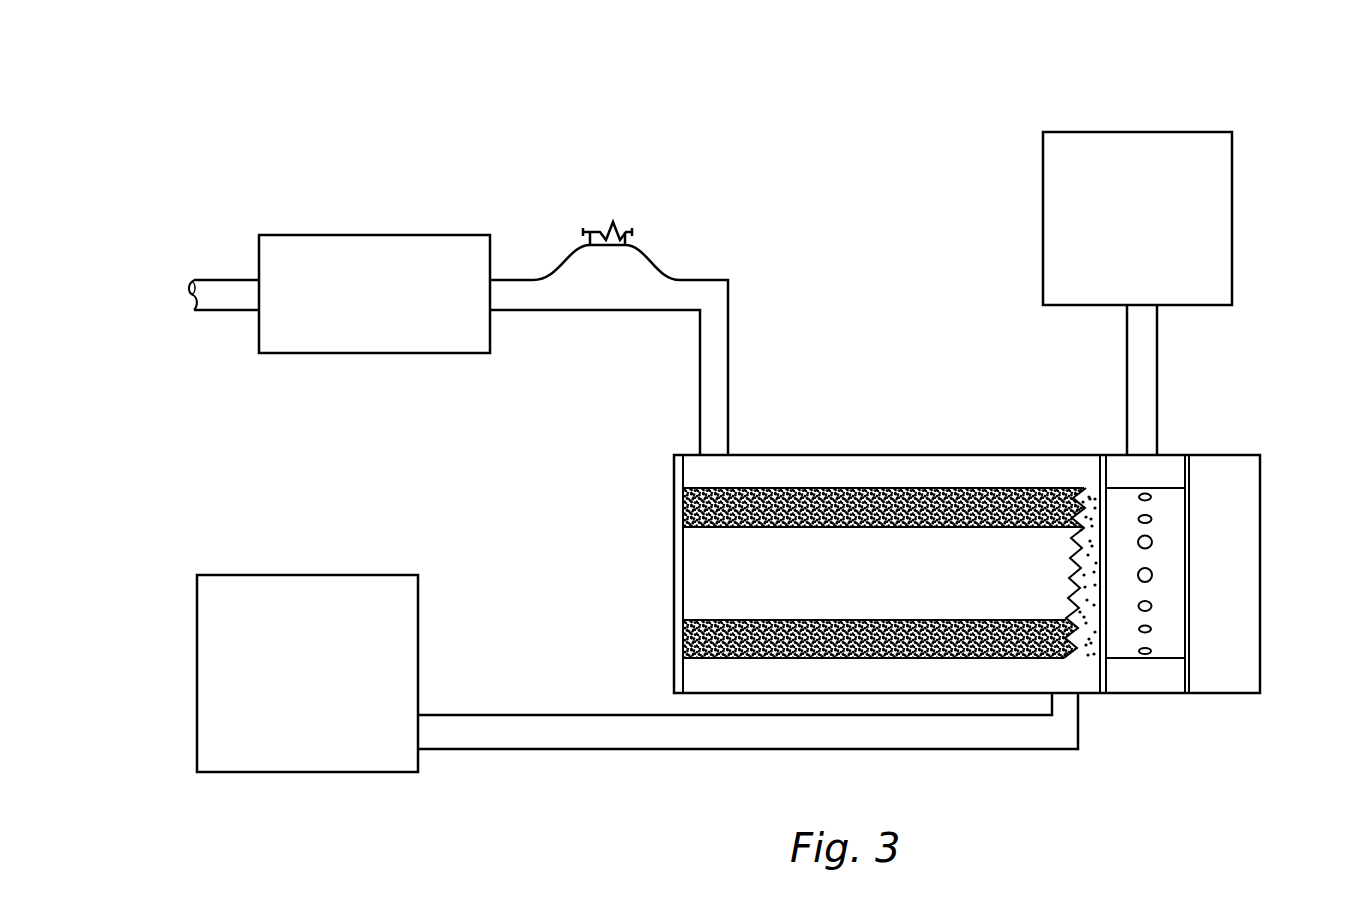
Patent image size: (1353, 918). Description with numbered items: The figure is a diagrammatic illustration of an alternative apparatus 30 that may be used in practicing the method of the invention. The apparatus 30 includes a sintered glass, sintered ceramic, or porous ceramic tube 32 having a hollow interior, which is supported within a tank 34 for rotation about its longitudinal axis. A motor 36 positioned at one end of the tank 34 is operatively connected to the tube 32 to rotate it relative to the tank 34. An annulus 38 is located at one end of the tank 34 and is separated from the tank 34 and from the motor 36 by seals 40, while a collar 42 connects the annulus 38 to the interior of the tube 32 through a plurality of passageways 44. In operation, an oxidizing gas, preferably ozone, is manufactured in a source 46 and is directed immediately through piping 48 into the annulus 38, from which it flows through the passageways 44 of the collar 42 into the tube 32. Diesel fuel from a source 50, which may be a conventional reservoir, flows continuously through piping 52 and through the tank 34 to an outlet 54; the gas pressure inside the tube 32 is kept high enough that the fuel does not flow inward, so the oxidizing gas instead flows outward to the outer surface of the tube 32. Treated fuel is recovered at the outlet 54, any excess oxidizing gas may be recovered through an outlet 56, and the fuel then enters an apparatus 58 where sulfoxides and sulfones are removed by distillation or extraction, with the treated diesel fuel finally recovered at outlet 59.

The apparatus 30 is at (830, 100).
The porous ceramic tube 32 is at (940, 470).
The tank 34 is at (1007, 445).
The motor 36 is at (1227, 610).
The annulus 38 is at (1190, 470).
The seals 40 is at (1101, 442).
The collar 42 is at (1192, 551).
The passageways 44 is at (1152, 608).
The source of oxidizing gas 46 is at (1262, 198).
The piping 48 is at (1195, 340).
The source of diesel fuel 50 is at (335, 555).
The piping 52 is at (514, 772).
The outlet 54 is at (697, 368).
The outlet 56 is at (583, 238).
The apparatus 58 is at (330, 235).
The outlet 59 is at (221, 280).